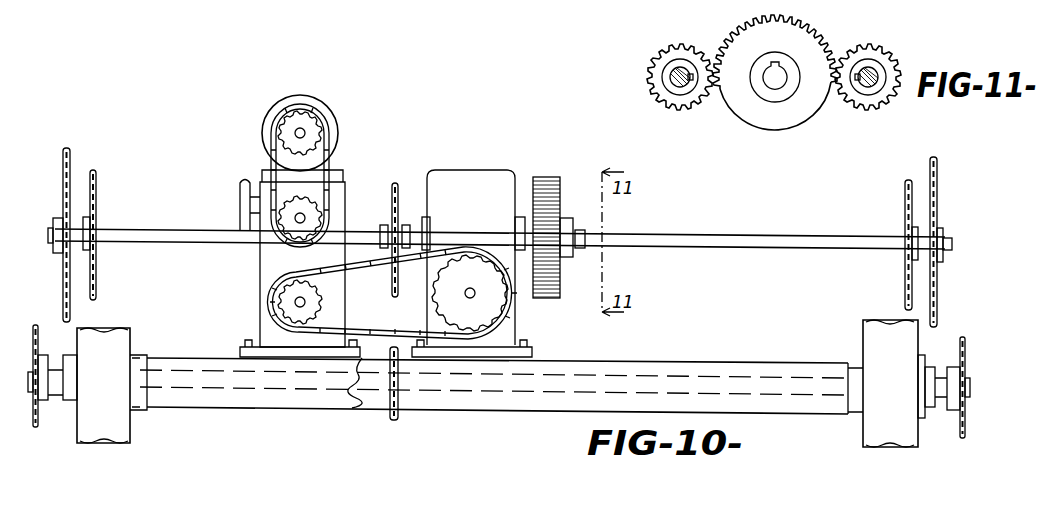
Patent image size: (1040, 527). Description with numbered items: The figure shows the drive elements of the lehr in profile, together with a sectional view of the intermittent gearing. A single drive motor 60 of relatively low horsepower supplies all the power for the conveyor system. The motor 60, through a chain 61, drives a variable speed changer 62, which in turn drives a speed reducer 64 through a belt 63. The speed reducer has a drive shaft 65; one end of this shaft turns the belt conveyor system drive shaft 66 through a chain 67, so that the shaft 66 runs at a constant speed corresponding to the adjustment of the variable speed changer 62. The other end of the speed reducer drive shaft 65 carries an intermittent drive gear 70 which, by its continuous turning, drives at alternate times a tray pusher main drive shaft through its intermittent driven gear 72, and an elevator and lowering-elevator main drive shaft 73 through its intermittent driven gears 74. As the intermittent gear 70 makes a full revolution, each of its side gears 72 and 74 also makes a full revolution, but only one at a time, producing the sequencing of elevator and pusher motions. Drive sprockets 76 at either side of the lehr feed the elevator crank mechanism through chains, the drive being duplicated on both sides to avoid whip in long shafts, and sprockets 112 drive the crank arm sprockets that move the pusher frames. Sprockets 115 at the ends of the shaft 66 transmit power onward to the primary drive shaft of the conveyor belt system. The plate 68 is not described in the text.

In FIG. 10, the drive motor 60 is at (262, 134).
In FIG. 10, the chain 61 is at (330, 178).
In FIG. 10, the variable speed changer 62 is at (260, 271).
In FIG. 10, the belt 63 is at (350, 270).
In FIG. 10, the speed reducer 64 is at (462, 172).
In FIG. 10, the speed reducer drive shaft 65 is at (399, 230).
In FIG. 10, the belt conveyor system drive shaft 66 is at (368, 398).
In FIG. 10, the chain 67 is at (388, 306).
In FIG. 10, the support plate 68 is at (399, 413).
In FIG. 10, the intermittent drive gear 70 is at (548, 177).
In FIG. 11, the intermittent drive gear 70 is at (789, 135).
In FIG. 11, the intermittent driven gear 72 is at (880, 106).
In FIG. 10, the elevator and lowering-elevator main drive shaft 73 is at (727, 222).
In FIG. 10, the intermittent driven gear 74 is at (551, 262).
In FIG. 11, the intermittent driven gear 74 is at (683, 100).
In FIG. 10, the drive sprocket 76 is at (96, 196).
In FIG. 10, the sprocket 112 is at (70, 160).
In FIG. 10, the sprocket 115 is at (50, 310).